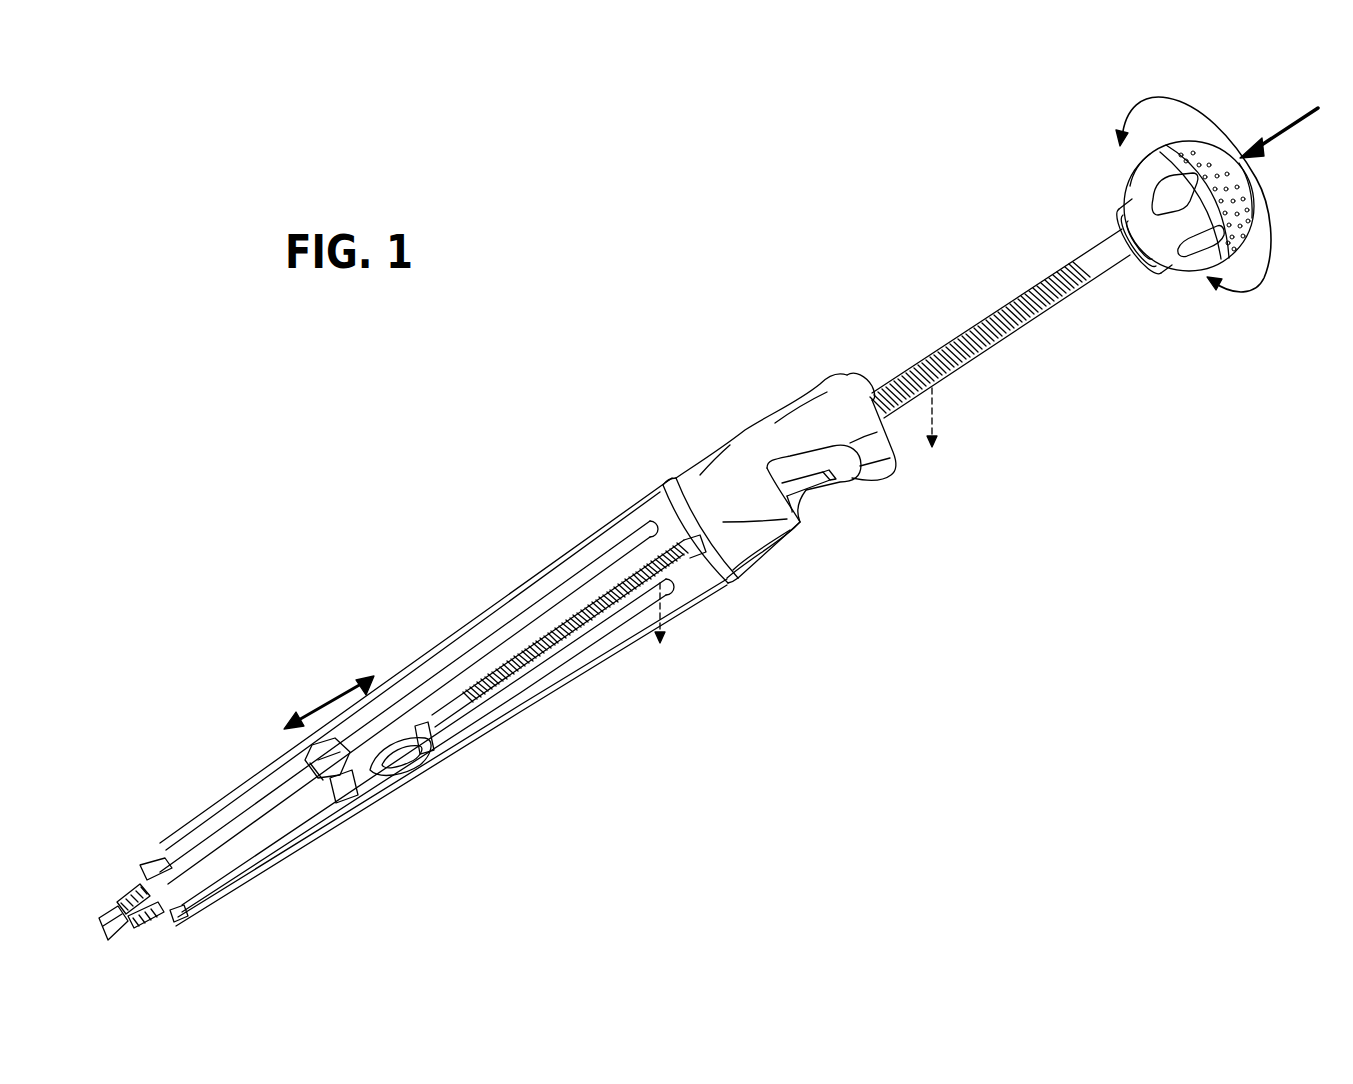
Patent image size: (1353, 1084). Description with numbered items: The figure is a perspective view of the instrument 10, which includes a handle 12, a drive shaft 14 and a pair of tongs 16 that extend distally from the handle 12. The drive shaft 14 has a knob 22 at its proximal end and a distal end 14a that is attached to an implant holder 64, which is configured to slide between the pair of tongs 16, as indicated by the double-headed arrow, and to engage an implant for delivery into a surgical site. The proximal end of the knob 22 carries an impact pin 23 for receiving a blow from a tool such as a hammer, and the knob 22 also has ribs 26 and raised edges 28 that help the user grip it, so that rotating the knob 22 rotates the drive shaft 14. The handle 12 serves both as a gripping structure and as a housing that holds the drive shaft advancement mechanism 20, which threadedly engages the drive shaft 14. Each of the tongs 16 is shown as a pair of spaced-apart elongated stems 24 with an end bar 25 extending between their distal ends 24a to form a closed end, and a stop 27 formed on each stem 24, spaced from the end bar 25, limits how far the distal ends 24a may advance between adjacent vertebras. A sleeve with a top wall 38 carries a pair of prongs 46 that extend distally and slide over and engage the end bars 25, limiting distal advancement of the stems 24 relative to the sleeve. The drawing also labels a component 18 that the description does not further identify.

The instrument 10 is at (546, 347).
The handle 12 is at (768, 367).
The drive shaft 14 is at (1030, 352).
The distal end 14a is at (432, 732).
The pair of tongs 16 is at (624, 672).
The threaded shaft 18 is at (979, 318).
The drive shaft advancement mechanism 20 is at (824, 531).
The knob 22 is at (1192, 107).
The impact pin 23 is at (1260, 176).
The elongated stems 24 is at (487, 618).
The distal ends 24a is at (118, 886).
The end bar 25 is at (108, 932).
The ribs 26 is at (1176, 287).
The stop 27 is at (152, 862).
The raised edges 28 is at (1220, 143).
The top wall 38 is at (852, 370).
The pair of prongs 46 is at (322, 746).
The implant holder 64 is at (383, 784).